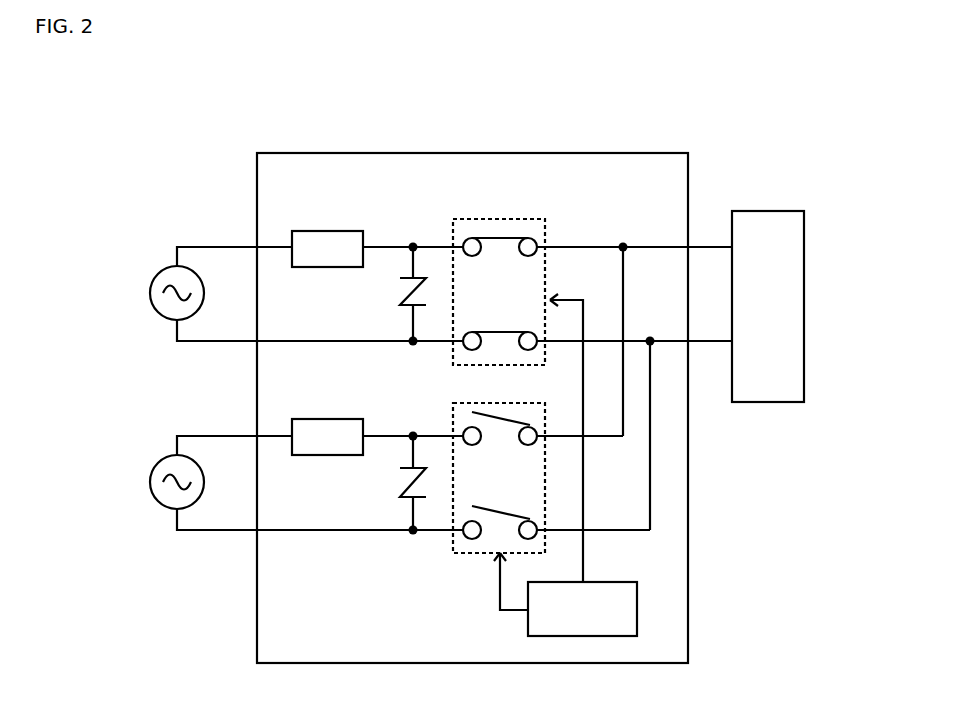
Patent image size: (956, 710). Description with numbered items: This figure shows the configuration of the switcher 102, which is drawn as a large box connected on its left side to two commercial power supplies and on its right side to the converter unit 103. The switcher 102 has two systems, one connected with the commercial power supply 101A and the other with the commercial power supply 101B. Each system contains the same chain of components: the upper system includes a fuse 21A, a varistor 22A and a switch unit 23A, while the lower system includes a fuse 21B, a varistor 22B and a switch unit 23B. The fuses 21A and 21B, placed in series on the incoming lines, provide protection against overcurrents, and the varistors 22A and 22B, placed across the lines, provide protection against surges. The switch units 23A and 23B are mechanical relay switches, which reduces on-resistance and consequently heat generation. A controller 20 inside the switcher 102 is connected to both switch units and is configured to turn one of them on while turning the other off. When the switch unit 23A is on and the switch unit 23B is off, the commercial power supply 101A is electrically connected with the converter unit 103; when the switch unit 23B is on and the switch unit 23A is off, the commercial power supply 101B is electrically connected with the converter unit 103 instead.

The switcher 102 is at (268, 153).
The converter unit 103 is at (780, 211).
The commercial power supply 101A is at (156, 274).
The commercial power supply 101B is at (156, 461).
The fuse 21A is at (316, 231).
The fuse 21B is at (316, 419).
The varistor 22A is at (405, 277).
The varistor 22B is at (405, 467).
The switch unit 23A is at (545, 219).
The switch unit 23B is at (465, 553).
The controller 20 is at (617, 582).